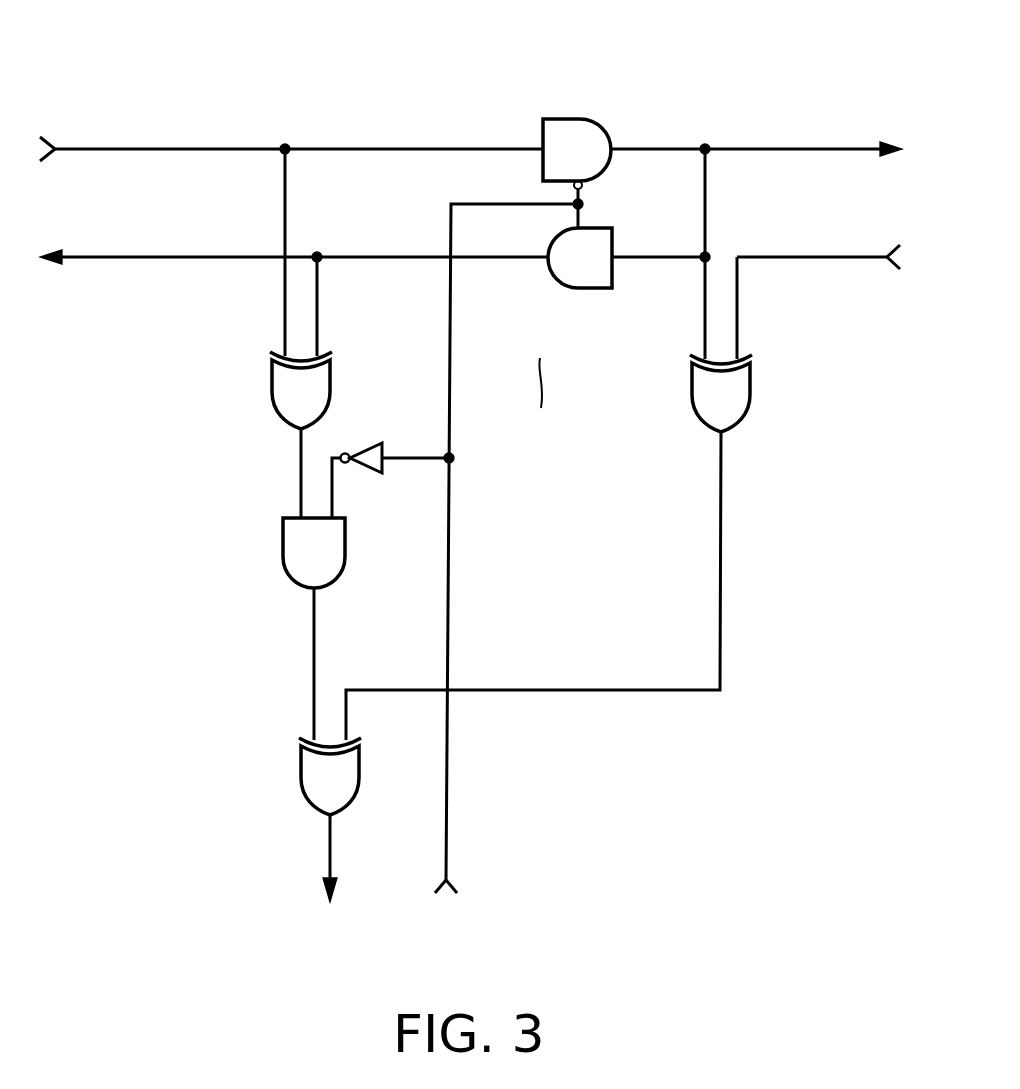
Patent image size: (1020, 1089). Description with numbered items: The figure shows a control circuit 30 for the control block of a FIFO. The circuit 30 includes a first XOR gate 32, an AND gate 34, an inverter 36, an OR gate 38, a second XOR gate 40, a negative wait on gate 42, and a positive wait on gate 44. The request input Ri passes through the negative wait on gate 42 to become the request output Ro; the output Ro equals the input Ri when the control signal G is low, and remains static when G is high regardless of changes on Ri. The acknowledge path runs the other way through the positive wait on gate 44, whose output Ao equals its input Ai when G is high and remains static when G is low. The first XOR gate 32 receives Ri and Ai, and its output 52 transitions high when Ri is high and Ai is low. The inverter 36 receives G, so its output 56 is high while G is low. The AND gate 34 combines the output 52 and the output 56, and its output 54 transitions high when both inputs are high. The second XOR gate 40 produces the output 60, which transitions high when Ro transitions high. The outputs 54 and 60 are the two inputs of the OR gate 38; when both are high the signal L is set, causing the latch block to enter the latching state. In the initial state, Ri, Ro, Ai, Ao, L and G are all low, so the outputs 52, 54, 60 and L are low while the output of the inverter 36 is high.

The circuit 30 is at (211, 887).
The first XOR gate 32 is at (316, 403).
The AND gate 34 is at (330, 558).
The inverter 36 is at (364, 446).
The OR gate 38 is at (345, 792).
The second XOR gate 40 is at (736, 410).
The negative wait on gate 42 is at (590, 121).
The positive wait on gate 44 is at (583, 290).
The output of XOR gate 52 is at (298, 473).
The output of AND gate 54 is at (312, 648).
The output of inverter 56 is at (334, 498).
The output of XOR gate 60 is at (721, 576).